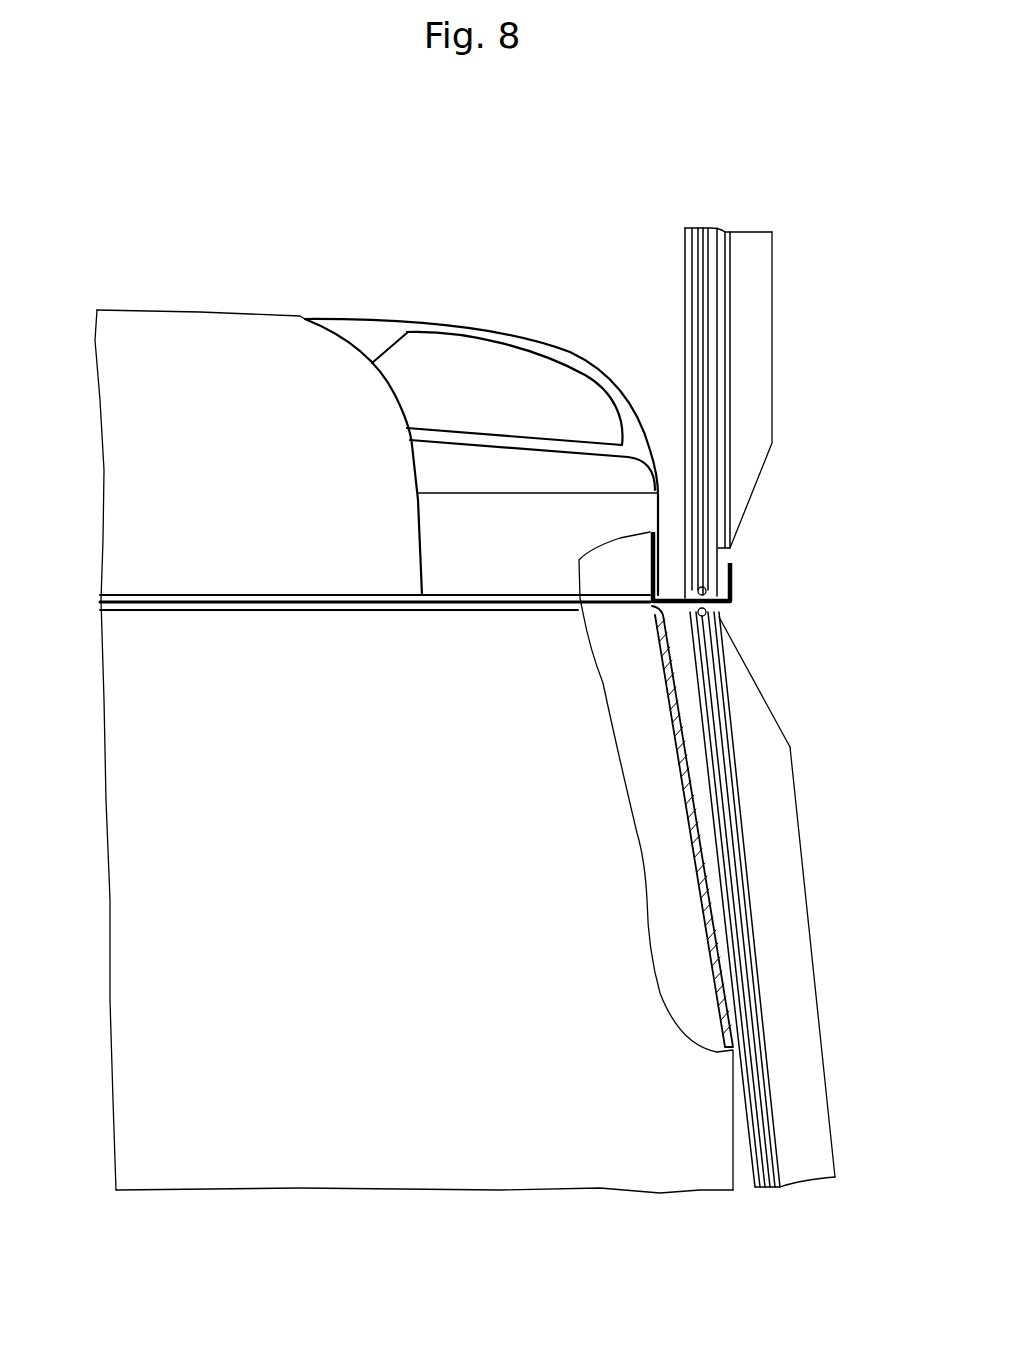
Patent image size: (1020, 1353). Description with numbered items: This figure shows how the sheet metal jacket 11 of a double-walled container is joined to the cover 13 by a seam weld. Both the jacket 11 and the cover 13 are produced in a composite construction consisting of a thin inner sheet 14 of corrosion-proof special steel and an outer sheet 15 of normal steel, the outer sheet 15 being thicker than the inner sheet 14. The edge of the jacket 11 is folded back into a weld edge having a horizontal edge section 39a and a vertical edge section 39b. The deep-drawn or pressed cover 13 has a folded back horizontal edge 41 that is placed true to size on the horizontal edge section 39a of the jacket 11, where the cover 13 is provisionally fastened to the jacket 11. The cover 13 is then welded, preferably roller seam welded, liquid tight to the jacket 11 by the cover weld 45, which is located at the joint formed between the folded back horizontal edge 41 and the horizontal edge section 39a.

The jacket 11 is at (157, 1150).
The cover 13 is at (223, 350).
The inner sheet 14 is at (640, 562).
The outer sheet 15 is at (642, 560).
The horizontal edge section 39a is at (653, 613).
The vertical edge section 39b is at (676, 575).
The folded back horizontal edge 41 is at (683, 613).
The cover weld 45 is at (717, 617).